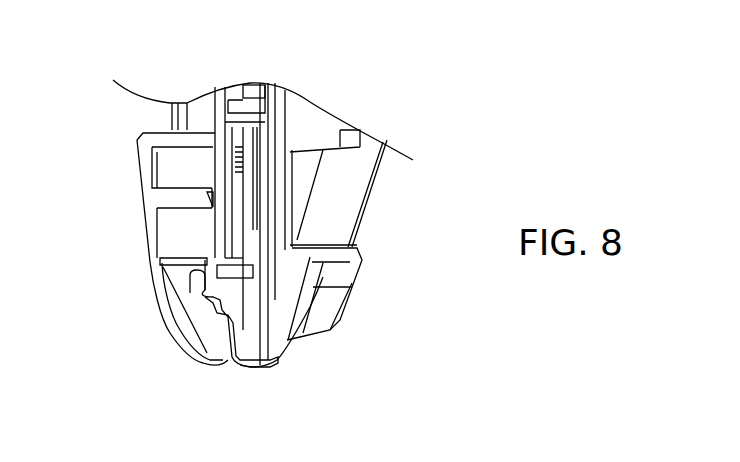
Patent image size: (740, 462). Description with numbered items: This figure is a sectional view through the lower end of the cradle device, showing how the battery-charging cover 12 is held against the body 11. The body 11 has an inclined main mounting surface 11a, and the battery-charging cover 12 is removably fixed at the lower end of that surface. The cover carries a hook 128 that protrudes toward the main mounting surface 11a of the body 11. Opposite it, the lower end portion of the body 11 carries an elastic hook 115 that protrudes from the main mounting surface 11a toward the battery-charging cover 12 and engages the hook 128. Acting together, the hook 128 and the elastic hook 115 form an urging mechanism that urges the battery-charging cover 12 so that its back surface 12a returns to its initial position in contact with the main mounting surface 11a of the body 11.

The body 11 is at (220, 150).
The main mounting surface 11a is at (213, 127).
The battery-charging cover 12 is at (150, 262).
The back surface 12a is at (207, 205).
The elastic hook 115 is at (190, 300).
The hook 128 is at (160, 262).